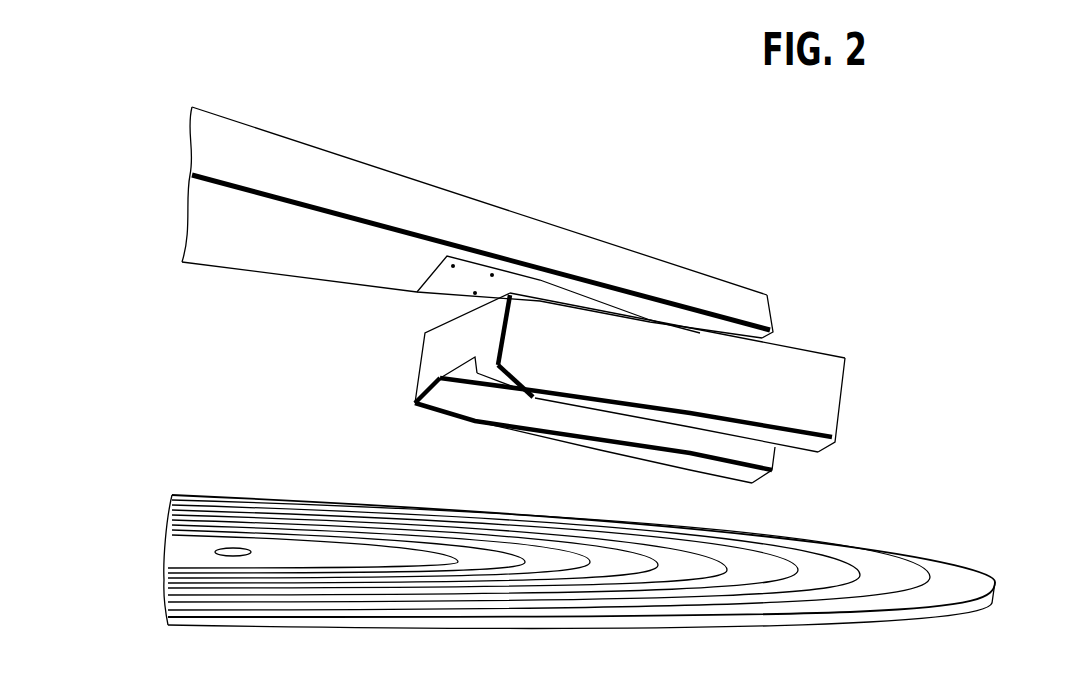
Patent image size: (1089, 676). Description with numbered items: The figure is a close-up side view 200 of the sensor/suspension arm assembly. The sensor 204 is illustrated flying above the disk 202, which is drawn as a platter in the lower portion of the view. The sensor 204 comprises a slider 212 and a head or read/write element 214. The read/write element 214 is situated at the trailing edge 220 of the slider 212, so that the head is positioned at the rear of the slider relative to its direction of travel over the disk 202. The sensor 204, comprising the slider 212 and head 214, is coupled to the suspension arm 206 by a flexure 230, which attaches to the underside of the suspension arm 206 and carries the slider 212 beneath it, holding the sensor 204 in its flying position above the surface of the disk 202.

The close-up side view 200 is at (795, 194).
The disk 202 is at (960, 573).
The sensor 204 is at (482, 450).
The suspension arm 206 is at (282, 147).
The slider 212 is at (825, 393).
The read/write element 214 is at (760, 475).
The trailing edge 220 is at (845, 358).
The flexure 230 is at (431, 291).